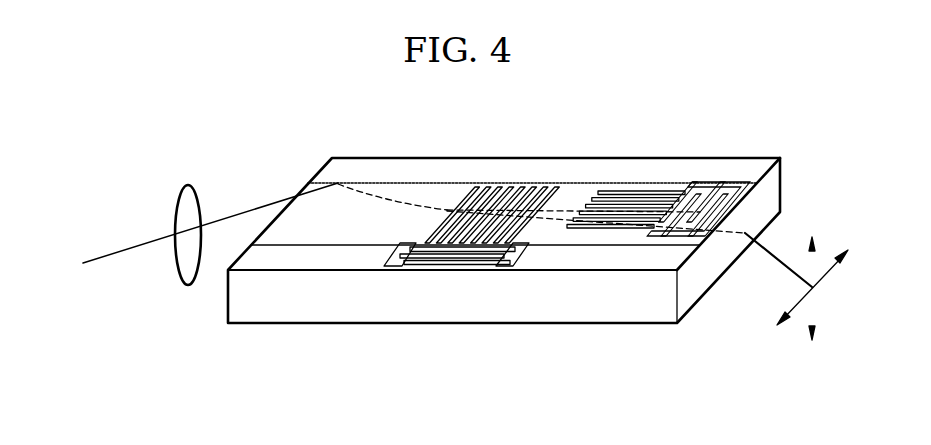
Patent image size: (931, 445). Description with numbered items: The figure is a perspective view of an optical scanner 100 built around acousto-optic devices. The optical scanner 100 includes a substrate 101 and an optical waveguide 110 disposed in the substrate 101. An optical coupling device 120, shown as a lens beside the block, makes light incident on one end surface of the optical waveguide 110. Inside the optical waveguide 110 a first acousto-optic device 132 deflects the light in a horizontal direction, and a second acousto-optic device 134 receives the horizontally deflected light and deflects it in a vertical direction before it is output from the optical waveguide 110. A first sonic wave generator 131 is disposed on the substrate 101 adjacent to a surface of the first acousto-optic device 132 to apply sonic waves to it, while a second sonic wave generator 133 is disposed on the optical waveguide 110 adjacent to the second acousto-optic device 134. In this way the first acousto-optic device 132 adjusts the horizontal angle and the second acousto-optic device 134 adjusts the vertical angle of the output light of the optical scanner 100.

The optical scanner 100 is at (502, 391).
The substrate 101 is at (603, 303).
The optical waveguide 110 is at (335, 227).
The optical coupling device 120 is at (186, 183).
The first sonic wave generator 131 is at (385, 265).
The first acousto-optic device 132 is at (503, 193).
The second sonic wave generator 133 is at (718, 183).
The second acousto-optic device 134 is at (638, 192).